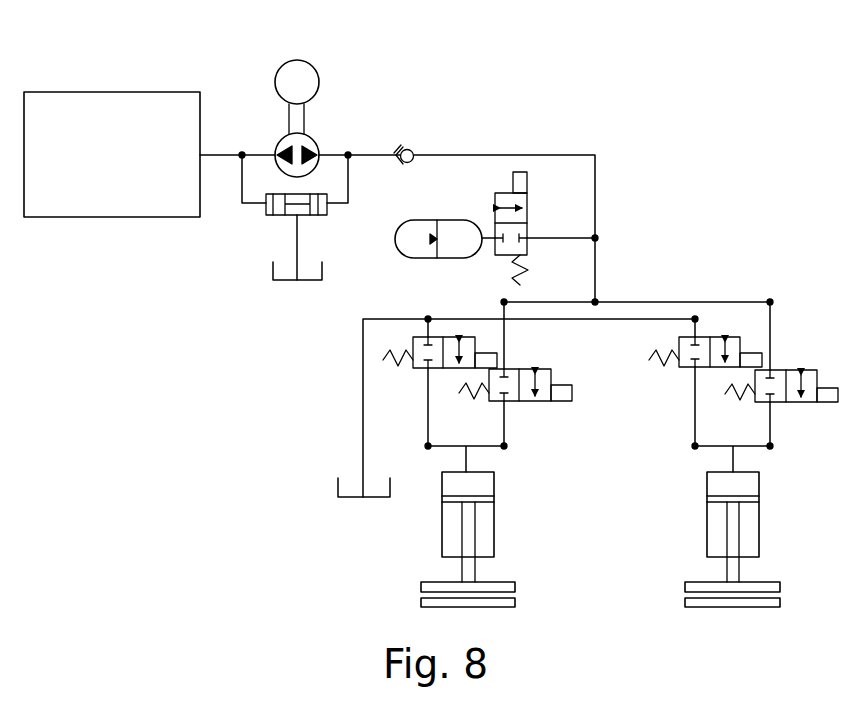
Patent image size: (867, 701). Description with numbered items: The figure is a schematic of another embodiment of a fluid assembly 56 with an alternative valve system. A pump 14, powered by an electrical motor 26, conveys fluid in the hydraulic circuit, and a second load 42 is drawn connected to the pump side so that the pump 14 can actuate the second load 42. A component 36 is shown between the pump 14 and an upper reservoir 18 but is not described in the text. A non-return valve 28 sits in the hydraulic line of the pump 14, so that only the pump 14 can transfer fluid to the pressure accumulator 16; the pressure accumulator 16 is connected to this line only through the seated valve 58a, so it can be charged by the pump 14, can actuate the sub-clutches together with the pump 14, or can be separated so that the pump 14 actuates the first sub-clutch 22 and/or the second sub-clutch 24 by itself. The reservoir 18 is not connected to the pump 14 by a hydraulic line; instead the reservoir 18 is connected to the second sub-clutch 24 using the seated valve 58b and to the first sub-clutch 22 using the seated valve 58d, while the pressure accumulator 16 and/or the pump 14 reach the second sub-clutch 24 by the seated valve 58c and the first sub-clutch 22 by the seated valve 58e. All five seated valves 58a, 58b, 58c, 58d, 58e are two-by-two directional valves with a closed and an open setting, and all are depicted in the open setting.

The second load 42 is at (112, 218).
The electrical motor 26 is at (312, 64).
The pump 14 is at (313, 141).
The non-return valve 28 is at (405, 148).
The pressure relief valve 36 is at (266, 215).
The reservoir 18 is at (272, 270).
The pressure accumulator 16 is at (396, 252).
The seated valve 58a is at (527, 197).
The seated valve 58b is at (413, 340).
The seated valve 58c is at (540, 402).
The seated valve 58d is at (733, 337).
The seated valve 58e is at (805, 370).
The second sub-clutch 24 is at (418, 480).
The first sub-clutch 22 is at (684, 480).
The fluid assembly 56 is at (184, 393).